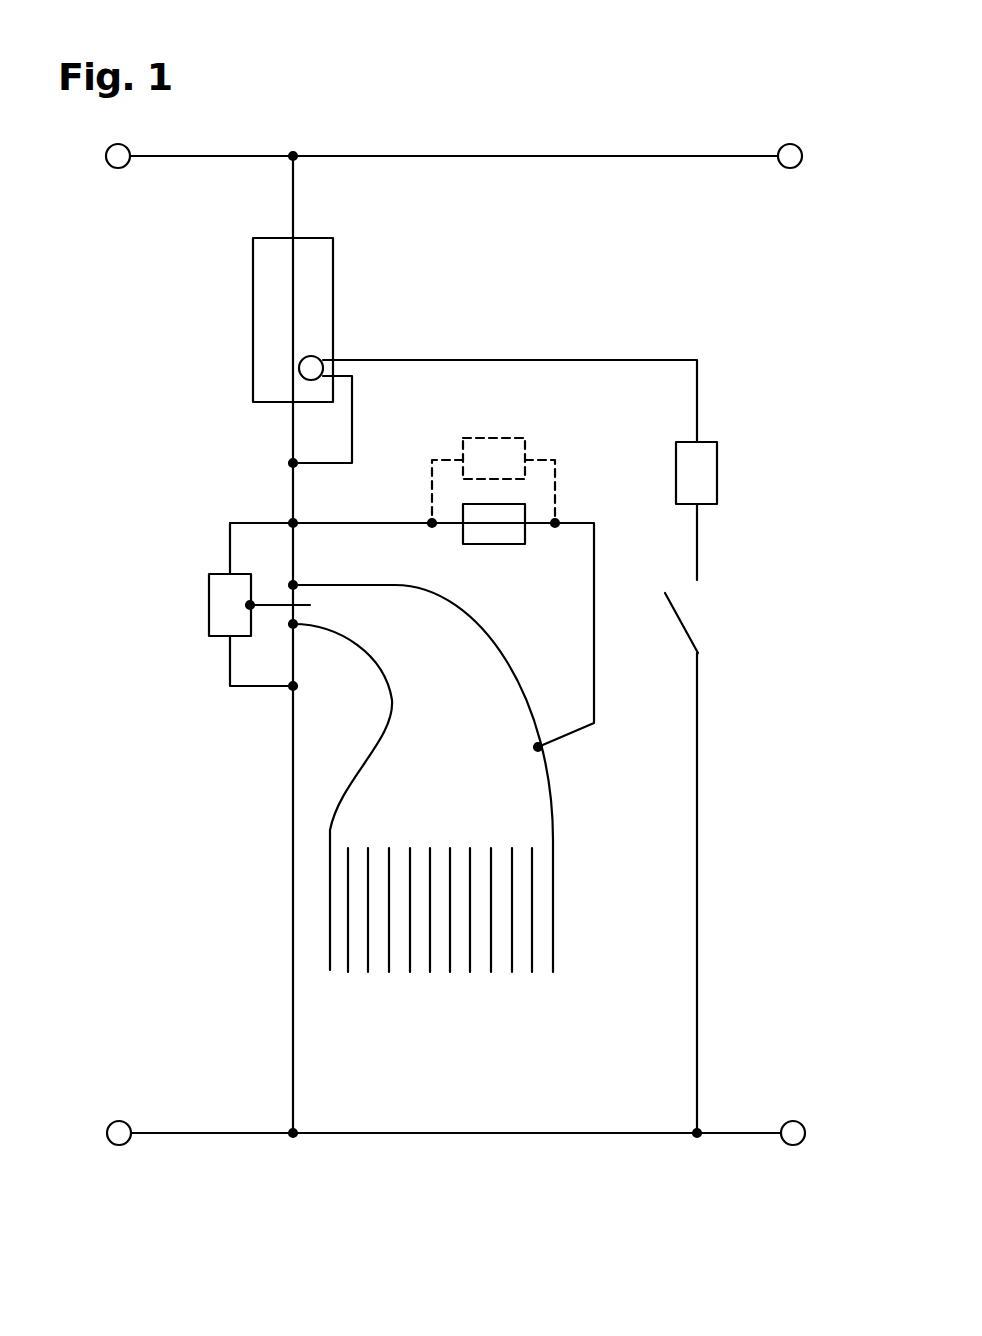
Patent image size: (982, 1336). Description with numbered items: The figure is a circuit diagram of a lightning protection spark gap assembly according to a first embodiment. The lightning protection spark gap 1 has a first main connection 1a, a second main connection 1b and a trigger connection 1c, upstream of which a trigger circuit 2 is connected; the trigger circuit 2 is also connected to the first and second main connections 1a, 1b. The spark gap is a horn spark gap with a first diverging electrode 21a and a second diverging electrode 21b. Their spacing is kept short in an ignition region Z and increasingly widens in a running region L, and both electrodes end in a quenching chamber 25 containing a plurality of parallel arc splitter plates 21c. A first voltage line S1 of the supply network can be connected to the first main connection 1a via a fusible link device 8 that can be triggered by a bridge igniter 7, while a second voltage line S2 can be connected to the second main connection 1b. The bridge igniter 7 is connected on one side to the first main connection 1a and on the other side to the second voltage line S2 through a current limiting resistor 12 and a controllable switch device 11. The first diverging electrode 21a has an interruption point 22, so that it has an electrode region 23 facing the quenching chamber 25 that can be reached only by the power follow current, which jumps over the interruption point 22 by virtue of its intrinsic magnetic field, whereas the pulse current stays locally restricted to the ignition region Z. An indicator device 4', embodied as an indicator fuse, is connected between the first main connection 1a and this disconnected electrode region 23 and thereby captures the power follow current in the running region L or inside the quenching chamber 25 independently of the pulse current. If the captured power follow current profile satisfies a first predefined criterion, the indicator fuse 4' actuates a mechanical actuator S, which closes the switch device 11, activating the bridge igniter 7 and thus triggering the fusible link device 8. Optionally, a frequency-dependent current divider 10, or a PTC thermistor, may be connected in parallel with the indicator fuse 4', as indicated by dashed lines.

The lightning protection spark gap 1 is at (160, 545).
The first main connection 1a is at (292, 522).
The second main connection 1b is at (292, 687).
The trigger connection 1c is at (248, 605).
The trigger circuit 2 is at (209, 614).
The indicator device 4' is at (501, 568).
The bridge igniter 7 is at (299, 365).
The fusible link device 8 is at (253, 313).
The frequency-dependent current divider 10 is at (494, 438).
The controllable switch device 11 is at (704, 604).
The current limiting resistor 12 is at (717, 475).
The first diverging electrode 21a is at (400, 587).
The second diverging electrode 21b is at (375, 660).
The arc splitter plates 21c is at (347, 950).
The interruption point 22 is at (538, 673).
The electrode region 23 is at (553, 820).
The quenching chamber 25 is at (572, 918).
The first voltage line S1 is at (590, 155).
The second voltage line S2 is at (493, 1135).
The mechanical actuator S is at (494, 578).
The ignition region Z is at (335, 607).
The running region L is at (446, 824).